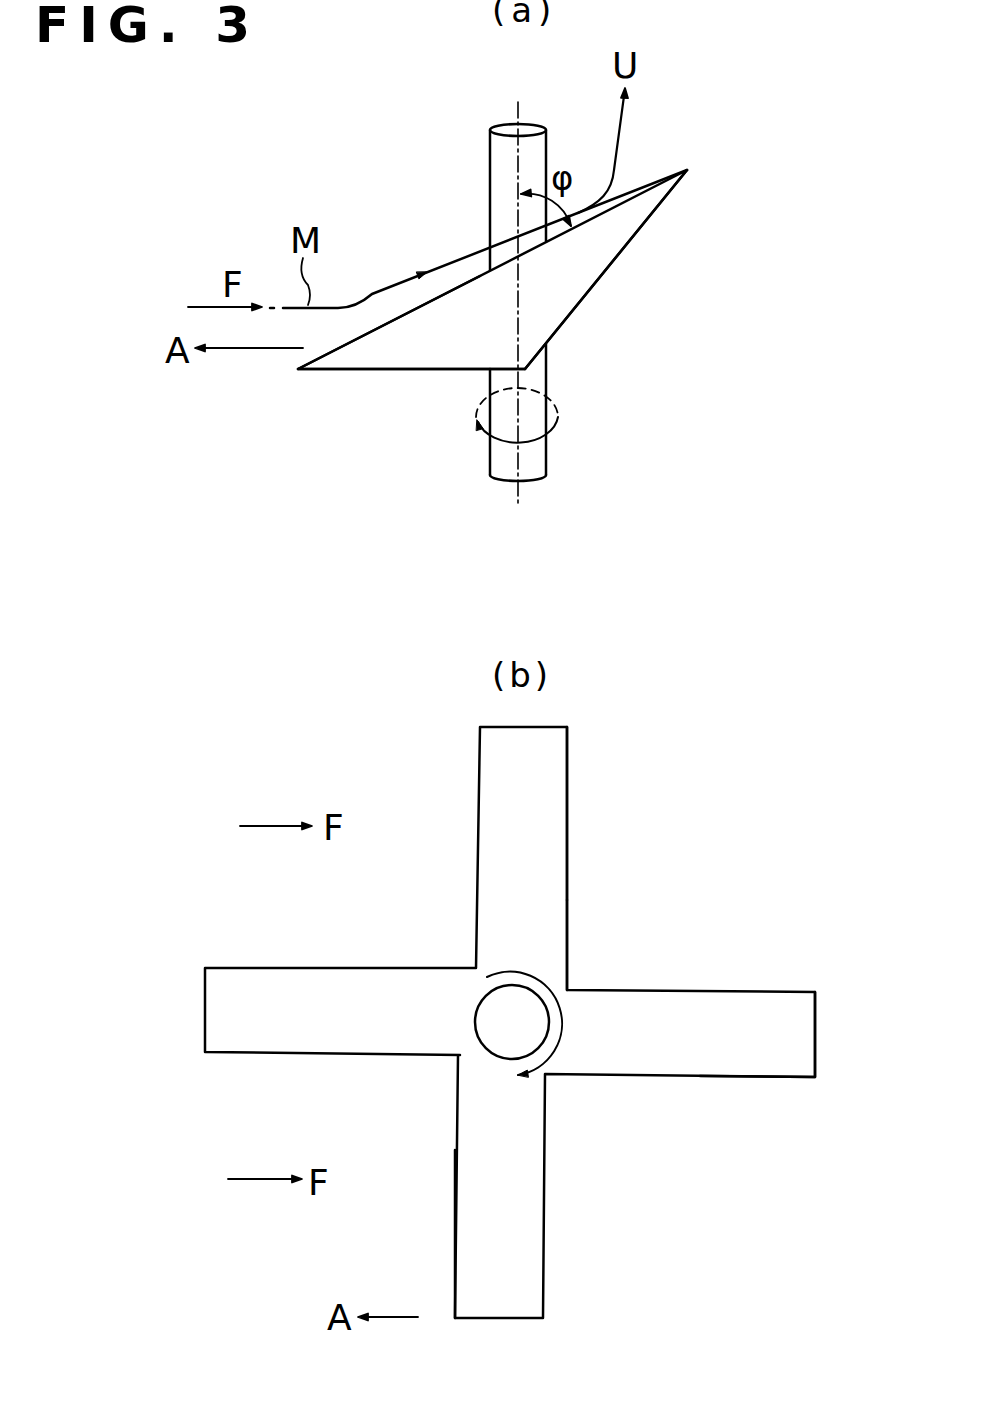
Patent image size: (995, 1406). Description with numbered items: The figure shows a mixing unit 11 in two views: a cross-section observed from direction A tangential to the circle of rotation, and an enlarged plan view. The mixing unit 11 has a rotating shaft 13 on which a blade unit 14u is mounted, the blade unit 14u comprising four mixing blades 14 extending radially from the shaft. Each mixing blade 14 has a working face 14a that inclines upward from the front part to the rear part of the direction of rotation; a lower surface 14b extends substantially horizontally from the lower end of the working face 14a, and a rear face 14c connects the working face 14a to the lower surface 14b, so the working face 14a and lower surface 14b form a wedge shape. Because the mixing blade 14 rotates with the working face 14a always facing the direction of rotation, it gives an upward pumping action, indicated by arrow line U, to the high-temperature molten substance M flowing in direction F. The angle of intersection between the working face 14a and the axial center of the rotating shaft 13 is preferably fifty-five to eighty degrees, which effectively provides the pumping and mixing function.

The mixing unit 11 is at (576, 958).
The rotating shaft 13 is at (490, 172).
The mixing blade 14 is at (630, 247).
The working face 14a is at (387, 321).
The lower surface 14b is at (390, 372).
The rear face 14c is at (569, 316).
The blade unit 14u is at (573, 818).